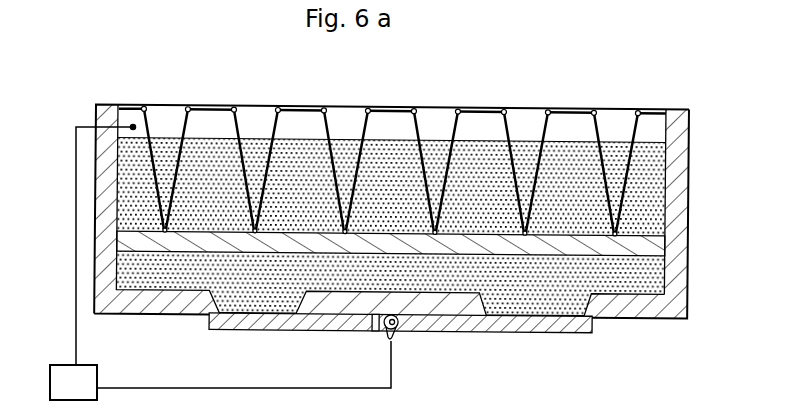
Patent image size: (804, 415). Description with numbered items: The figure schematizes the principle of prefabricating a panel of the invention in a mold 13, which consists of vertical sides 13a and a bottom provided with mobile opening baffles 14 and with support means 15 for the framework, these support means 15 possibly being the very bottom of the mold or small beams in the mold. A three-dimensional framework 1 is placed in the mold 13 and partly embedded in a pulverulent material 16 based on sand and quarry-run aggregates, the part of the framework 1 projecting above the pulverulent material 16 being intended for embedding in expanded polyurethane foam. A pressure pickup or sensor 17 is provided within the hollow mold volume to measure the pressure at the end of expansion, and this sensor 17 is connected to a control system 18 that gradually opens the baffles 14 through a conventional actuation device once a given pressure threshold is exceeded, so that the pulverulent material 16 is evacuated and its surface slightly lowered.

The three-dimensional framework 1 is at (328, 130).
The mold 13 is at (702, 247).
The vertical sides 13a is at (673, 197).
The mobile opening baffles 14 is at (487, 333).
The support means 15 is at (515, 247).
The pulverulent material 16 is at (214, 153).
The pressure pickup or sensor 17 is at (133, 125).
The control system 18 is at (87, 385).